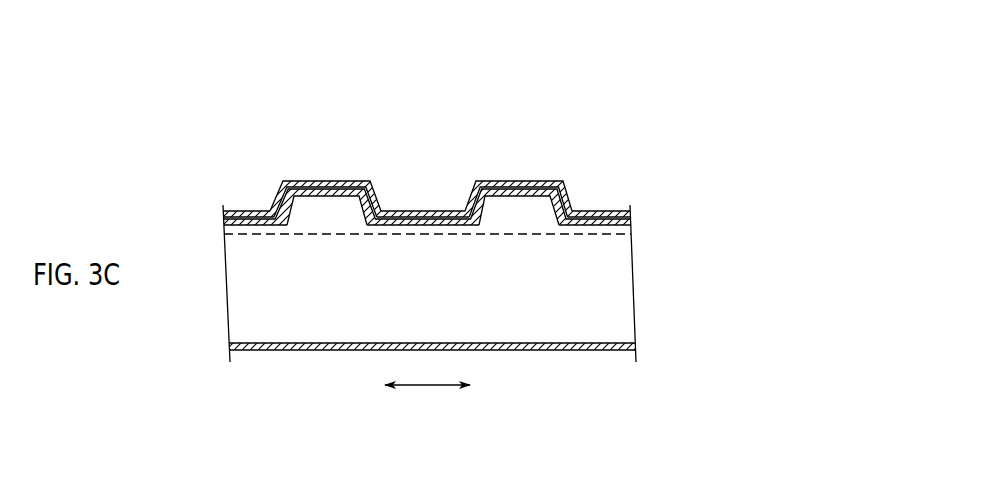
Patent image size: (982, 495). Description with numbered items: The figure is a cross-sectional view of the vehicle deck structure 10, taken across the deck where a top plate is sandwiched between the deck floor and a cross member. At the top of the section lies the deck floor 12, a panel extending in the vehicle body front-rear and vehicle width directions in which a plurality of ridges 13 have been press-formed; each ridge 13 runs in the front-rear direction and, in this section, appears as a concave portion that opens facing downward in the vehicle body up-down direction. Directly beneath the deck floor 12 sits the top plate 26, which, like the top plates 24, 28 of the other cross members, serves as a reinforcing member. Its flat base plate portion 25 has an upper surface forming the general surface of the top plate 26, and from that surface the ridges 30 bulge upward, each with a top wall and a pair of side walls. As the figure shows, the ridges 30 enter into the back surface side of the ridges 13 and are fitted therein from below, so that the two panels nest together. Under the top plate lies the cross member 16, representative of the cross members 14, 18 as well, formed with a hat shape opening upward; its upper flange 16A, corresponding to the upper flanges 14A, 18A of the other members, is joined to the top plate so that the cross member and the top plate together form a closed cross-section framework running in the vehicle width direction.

The vehicle deck structure 10 is at (693, 128).
The deck floor 12 is at (600, 207).
The ridge 13 is at (338, 183).
The base plate portion 25 is at (421, 213).
The ridge 30 is at (317, 183).
The top plate 26 is at (457, 253).
The top plate 24 is at (457, 253).
The top plate 28 is at (548, 218).
The cross member 16 is at (439, 321).
The cross member 14 is at (439, 321).
The cross member 18 is at (518, 350).
The upper flange 16A is at (427, 281).
The upper flange 14A is at (427, 281).
The upper flange 18A is at (343, 230).